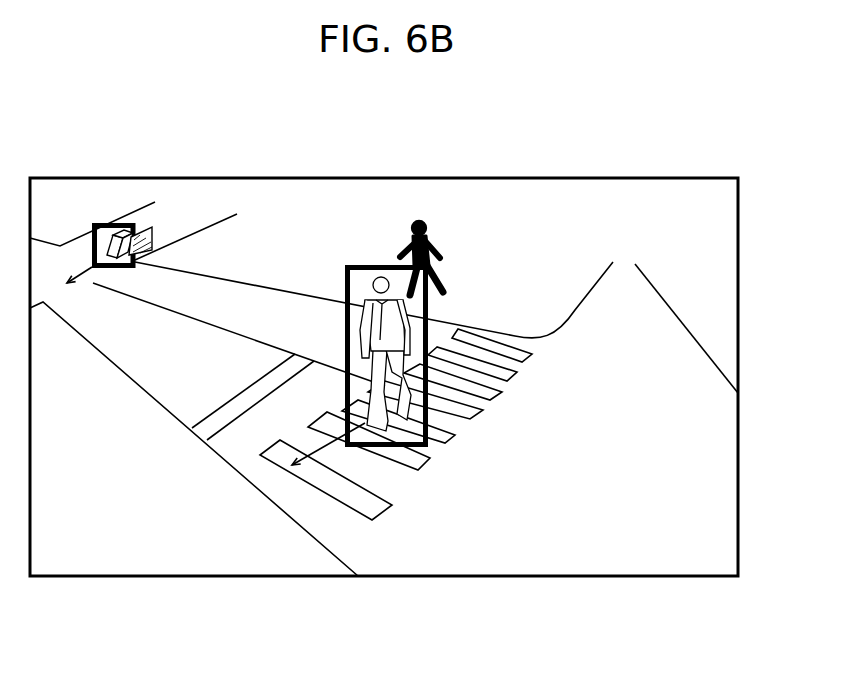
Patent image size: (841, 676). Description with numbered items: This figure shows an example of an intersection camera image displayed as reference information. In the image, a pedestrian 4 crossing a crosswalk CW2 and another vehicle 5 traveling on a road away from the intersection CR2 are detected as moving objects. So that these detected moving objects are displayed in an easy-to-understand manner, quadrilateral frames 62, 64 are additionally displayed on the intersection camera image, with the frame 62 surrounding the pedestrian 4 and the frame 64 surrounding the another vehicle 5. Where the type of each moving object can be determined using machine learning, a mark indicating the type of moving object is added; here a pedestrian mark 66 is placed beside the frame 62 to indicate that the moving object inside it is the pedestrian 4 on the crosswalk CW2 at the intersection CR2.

The pedestrian 4 is at (365, 298).
The another vehicle 5 is at (146, 228).
The quadrilateral frame 62 is at (345, 288).
The quadrilateral frame 64 is at (92, 265).
The pedestrian mark 66 is at (416, 222).
The crosswalk CW2 is at (330, 497).
The intersection CR2 is at (628, 482).